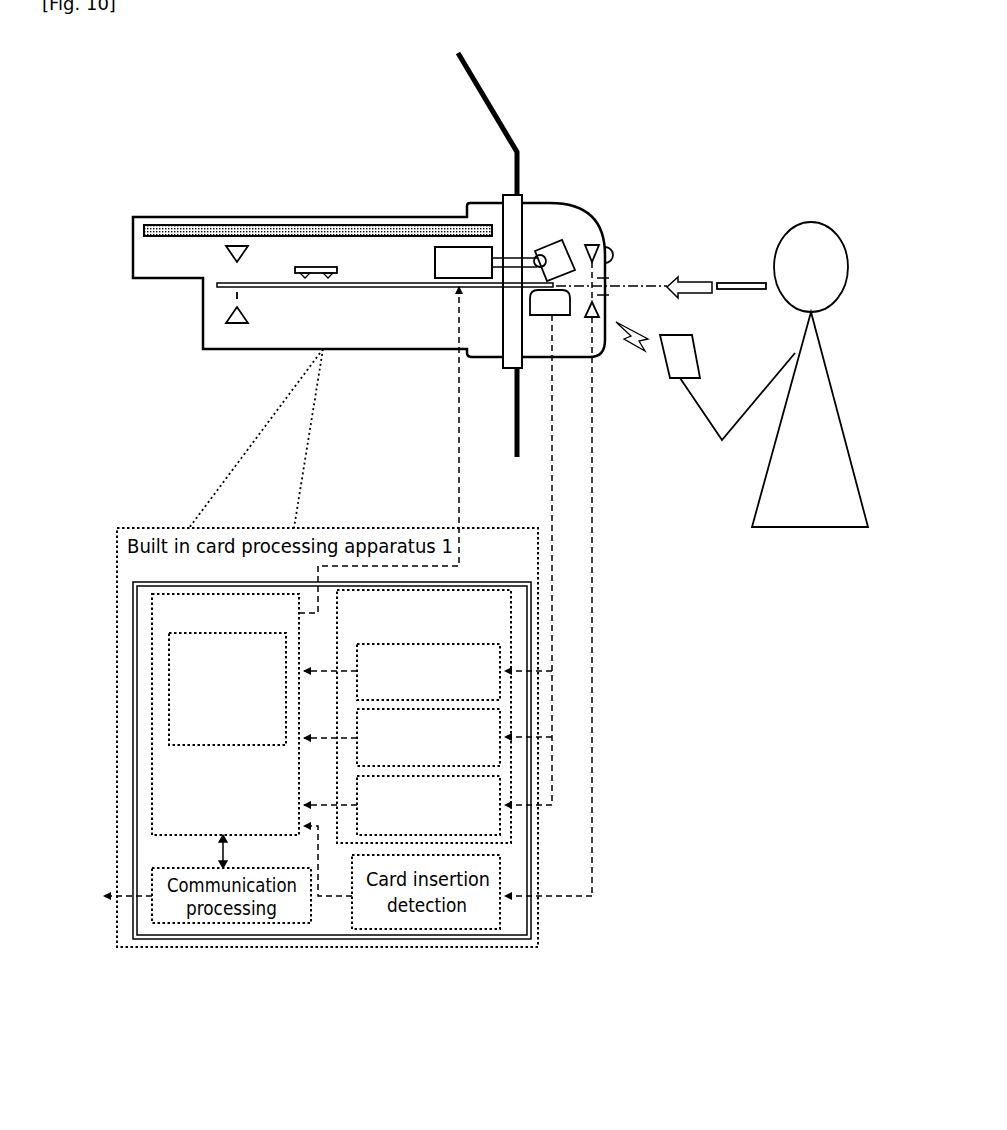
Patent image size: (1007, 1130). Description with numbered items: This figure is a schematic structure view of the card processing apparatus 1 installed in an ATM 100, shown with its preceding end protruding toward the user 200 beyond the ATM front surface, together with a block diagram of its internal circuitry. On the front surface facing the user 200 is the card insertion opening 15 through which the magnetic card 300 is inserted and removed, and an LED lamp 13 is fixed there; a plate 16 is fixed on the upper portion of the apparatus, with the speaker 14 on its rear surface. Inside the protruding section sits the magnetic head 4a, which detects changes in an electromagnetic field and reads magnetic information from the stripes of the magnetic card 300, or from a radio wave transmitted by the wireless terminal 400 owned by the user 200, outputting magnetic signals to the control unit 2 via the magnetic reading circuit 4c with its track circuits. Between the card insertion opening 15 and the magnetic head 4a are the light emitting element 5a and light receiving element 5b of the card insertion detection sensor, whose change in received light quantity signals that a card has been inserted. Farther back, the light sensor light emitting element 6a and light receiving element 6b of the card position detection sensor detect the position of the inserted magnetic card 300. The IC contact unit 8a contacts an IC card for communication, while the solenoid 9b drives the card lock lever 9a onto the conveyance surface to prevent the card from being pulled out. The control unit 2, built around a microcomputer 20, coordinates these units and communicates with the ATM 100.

The card processing apparatus 1 is at (580, 147).
The control unit 2 is at (225, 714).
The magnetic head 4a is at (548, 318).
The magnetic reading circuit 4c is at (424, 716).
The light emitting element 5a is at (600, 357).
The light receiving element 5b is at (592, 245).
The light sensor light emitting element 6a is at (236, 324).
The light receiving element 6b is at (237, 246).
The IC contact unit 8a is at (317, 267).
The card lock lever 9a is at (560, 240).
The solenoid 9b is at (465, 250).
The LED lamp 13 is at (618, 249).
The speaker 14 is at (478, 88).
The card insertion opening 15 is at (618, 277).
The plate 16 is at (503, 118).
The microcomputer (CPU) 20 is at (392, 225).
The ATM 100 is at (98, 900).
The user 200 is at (817, 222).
The magnetic card 300 is at (322, 292).
The wireless terminal 400 is at (700, 363).